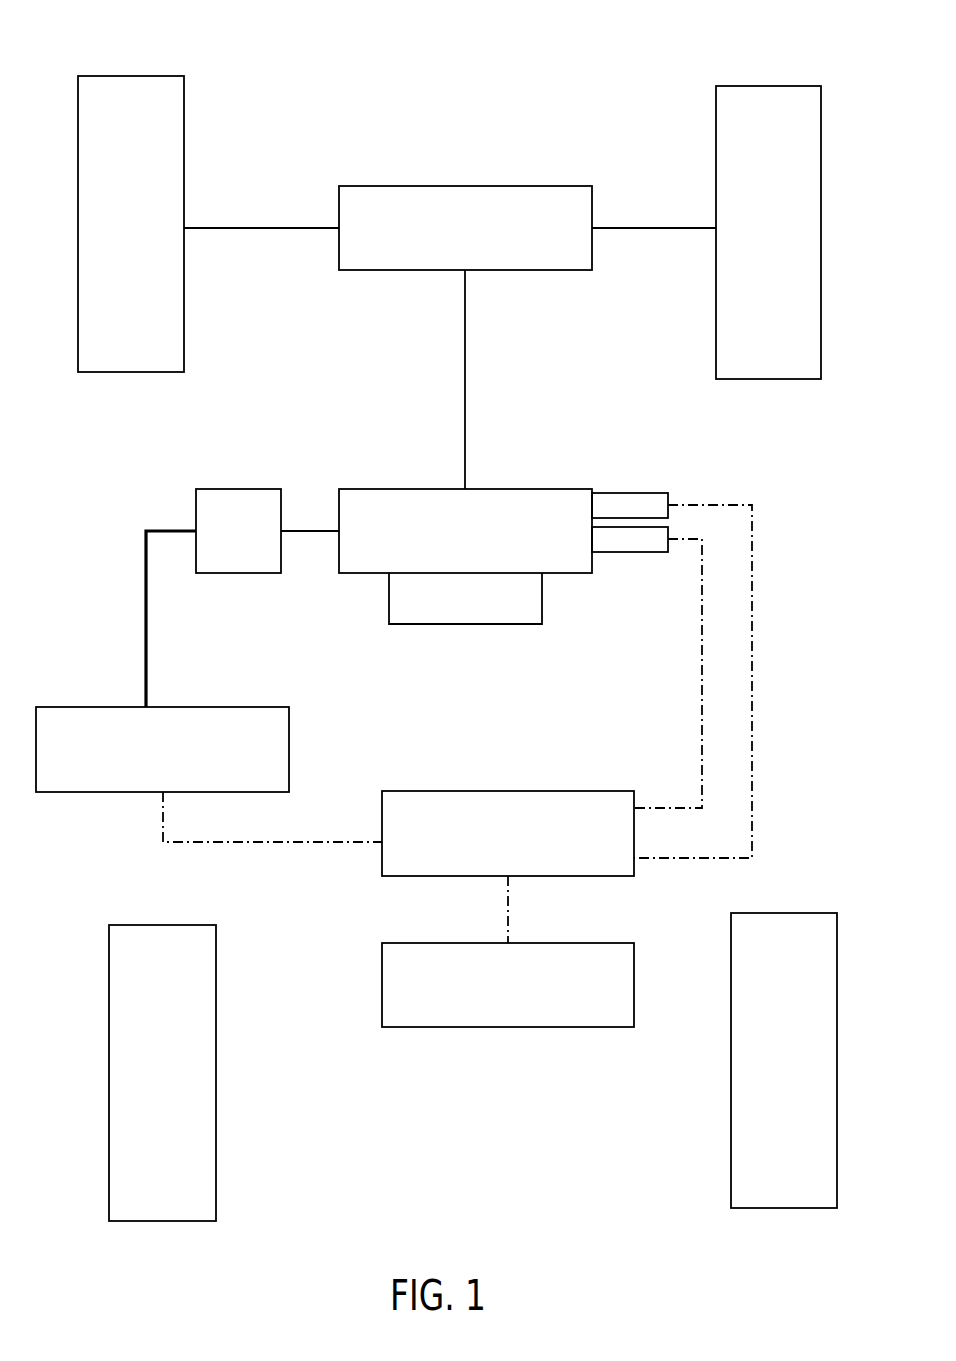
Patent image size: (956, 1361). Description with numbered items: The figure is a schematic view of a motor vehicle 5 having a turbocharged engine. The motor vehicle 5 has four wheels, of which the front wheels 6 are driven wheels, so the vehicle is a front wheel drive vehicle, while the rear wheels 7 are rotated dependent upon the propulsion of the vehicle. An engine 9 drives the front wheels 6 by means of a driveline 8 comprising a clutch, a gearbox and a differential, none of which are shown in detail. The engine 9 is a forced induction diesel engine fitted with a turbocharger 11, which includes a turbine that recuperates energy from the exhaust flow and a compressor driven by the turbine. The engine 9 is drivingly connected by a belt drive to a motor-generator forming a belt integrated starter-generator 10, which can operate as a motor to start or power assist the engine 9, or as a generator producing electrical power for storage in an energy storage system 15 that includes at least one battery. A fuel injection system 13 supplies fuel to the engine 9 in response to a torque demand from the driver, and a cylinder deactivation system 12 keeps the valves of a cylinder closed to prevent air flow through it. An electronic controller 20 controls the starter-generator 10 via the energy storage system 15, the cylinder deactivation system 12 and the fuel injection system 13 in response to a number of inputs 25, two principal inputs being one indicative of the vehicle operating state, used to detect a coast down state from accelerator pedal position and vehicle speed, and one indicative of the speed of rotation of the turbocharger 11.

The motor vehicle 5 is at (568, 34).
The front wheels 6 is at (125, 234).
The rear wheels 7 is at (156, 1084).
The driveline 8 is at (459, 238).
The engine 9 is at (459, 542).
The belt integrated starter-generator 10 is at (226, 542).
The turbocharger 11 is at (453, 608).
The cylinder deactivation system 12 is at (618, 516).
The fuel injection system 13 is at (618, 550).
The energy storage system 15 is at (150, 758).
The electronic controller 20 is at (496, 842).
The inputs 25 is at (496, 994).